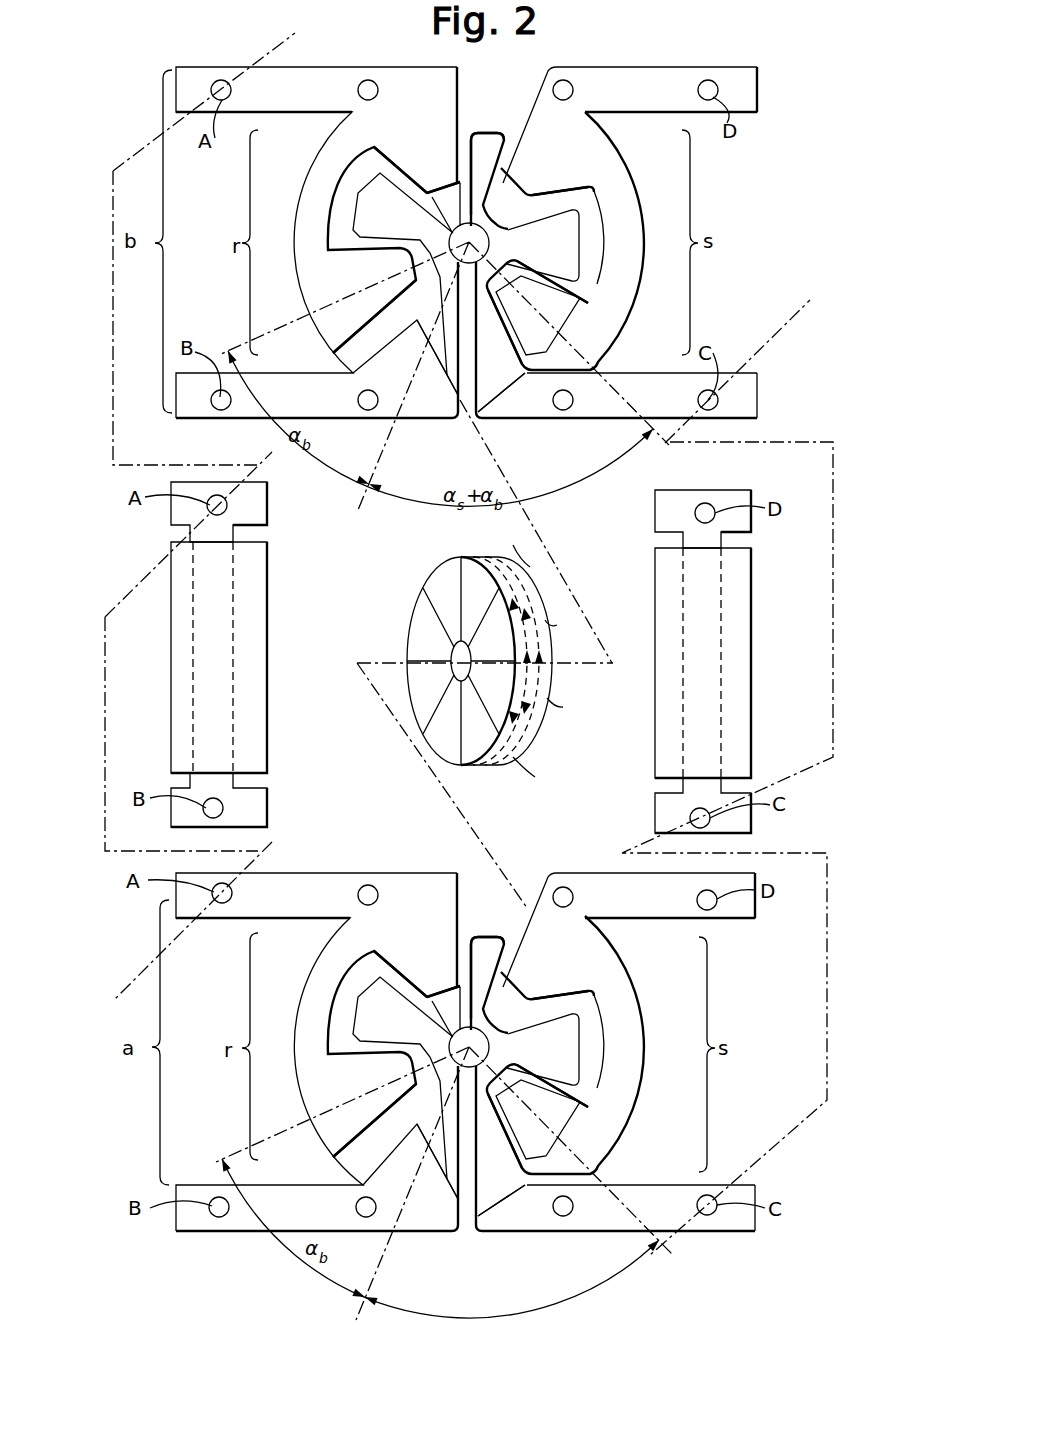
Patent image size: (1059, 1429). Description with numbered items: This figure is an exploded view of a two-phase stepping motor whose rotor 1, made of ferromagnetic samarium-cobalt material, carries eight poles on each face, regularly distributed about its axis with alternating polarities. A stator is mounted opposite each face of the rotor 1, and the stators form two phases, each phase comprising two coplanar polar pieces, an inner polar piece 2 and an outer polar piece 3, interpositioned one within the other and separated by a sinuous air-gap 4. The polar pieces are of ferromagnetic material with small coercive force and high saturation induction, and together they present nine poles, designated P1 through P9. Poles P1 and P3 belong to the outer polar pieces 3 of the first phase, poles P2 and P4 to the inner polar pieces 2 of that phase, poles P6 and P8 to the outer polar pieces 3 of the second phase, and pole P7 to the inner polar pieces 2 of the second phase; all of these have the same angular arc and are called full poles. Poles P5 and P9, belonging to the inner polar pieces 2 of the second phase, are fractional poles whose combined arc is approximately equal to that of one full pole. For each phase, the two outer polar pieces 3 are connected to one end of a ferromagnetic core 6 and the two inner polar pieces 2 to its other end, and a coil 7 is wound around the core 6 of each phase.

The rotor 1 is at (409, 662).
The inner polar piece 2 is at (342, 410).
The outer polar piece 3 is at (317, 185).
The sinuous air-gap 4 is at (372, 158).
The core 6 is at (193, 540).
The coil 7 is at (187, 648).
The pole p1 P1 is at (447, 132).
The pole p2 P2 is at (373, 1012).
The pole p3 P3 is at (291, 1095).
The pole p4 P4 is at (430, 1250).
The pole p5 P5 is at (493, 362).
The pole p6 P6 is at (537, 345).
The pole p7 P7 is at (573, 245).
The pole p8 P8 is at (540, 177).
The pole p9 P9 is at (483, 145).